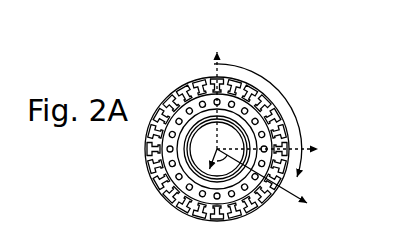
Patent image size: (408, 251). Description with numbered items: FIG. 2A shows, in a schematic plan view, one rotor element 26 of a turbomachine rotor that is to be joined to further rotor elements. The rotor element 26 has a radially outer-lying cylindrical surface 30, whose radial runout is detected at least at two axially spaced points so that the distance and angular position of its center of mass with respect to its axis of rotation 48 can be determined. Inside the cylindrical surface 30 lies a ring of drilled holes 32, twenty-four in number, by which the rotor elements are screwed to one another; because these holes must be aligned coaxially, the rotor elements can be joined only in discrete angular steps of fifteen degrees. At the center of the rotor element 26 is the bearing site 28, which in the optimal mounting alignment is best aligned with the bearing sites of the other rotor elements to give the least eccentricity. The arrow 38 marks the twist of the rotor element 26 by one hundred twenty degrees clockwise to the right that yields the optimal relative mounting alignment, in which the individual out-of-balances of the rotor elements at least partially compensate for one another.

The rotor element 26 is at (259, 212).
The bearing site 28 is at (192, 163).
The radially outer-lying cylindrical surface 30 is at (166, 79).
The drilled holes 32 is at (245, 110).
The arrow 38 is at (282, 92).
The axis of rotation 48 is at (192, 176).